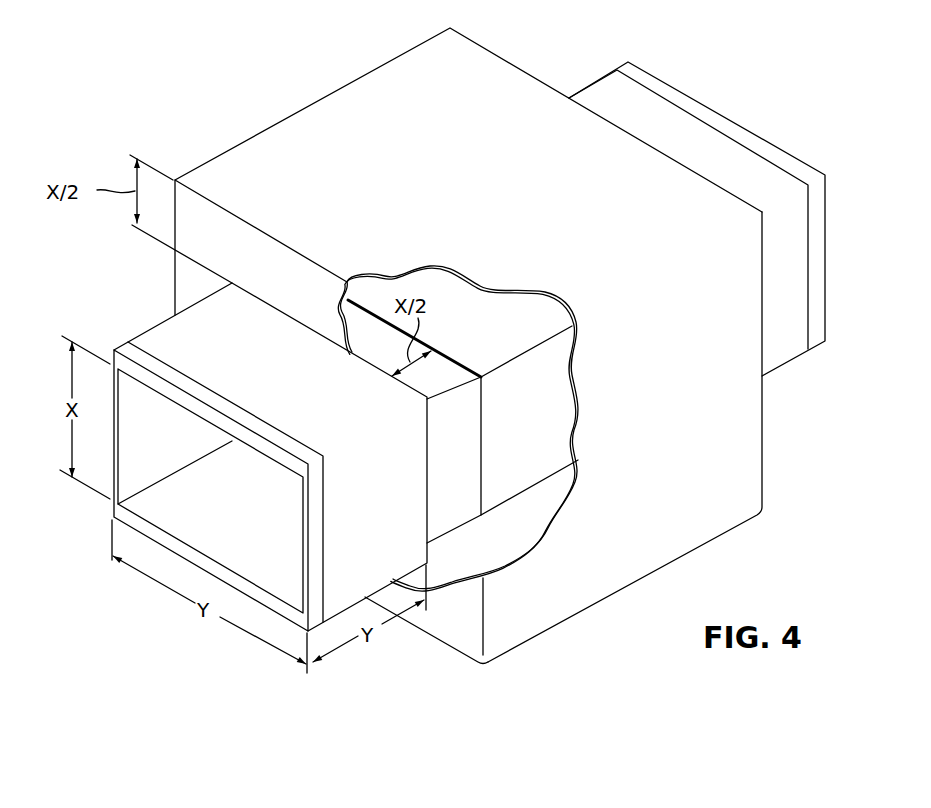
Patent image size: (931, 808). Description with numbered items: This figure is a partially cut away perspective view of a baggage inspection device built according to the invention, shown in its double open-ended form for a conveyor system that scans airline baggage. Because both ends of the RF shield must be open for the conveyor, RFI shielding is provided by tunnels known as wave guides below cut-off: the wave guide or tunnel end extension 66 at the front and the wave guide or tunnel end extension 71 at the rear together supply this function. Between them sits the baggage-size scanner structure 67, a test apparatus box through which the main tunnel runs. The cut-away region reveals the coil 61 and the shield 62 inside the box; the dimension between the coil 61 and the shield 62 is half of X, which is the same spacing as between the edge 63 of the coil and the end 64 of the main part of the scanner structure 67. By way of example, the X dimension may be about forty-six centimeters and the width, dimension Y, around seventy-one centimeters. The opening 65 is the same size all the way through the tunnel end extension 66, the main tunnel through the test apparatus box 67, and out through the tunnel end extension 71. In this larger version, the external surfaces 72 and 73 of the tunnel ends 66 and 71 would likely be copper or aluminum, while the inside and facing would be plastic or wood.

The coil 61 is at (502, 312).
The shield 62 is at (303, 123).
The edge of the coil 63 is at (458, 365).
The end of the main part of the scanner structure 64 is at (377, 360).
The opening 65 is at (213, 512).
The wave guide or tunnel end extension 66 is at (168, 330).
The baggage-size scanner structure 67 is at (740, 442).
The wave guide or tunnel end extension 71 is at (713, 105).
The external surface of tunnel end 72 is at (347, 533).
The external surface of tunnel end 73 is at (757, 166).